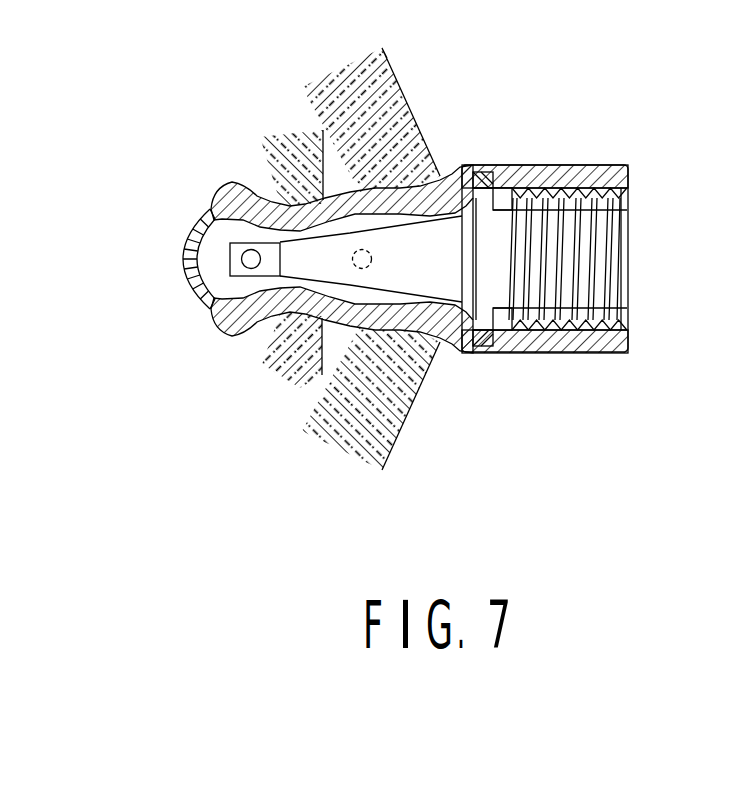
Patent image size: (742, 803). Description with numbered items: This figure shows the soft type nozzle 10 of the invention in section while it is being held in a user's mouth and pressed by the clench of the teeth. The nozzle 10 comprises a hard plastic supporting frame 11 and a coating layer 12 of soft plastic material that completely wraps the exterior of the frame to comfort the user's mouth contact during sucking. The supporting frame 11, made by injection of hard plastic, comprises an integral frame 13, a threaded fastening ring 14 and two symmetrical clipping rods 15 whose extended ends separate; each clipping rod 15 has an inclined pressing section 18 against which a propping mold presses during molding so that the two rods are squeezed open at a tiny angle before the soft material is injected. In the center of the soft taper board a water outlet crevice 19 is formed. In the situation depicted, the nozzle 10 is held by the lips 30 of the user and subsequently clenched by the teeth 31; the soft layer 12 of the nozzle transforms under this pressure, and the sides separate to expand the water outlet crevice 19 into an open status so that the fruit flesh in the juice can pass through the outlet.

The nozzle 10 is at (550, 150).
The supporting frame 11 is at (595, 304).
The coating layer 12 is at (291, 239).
The integral frame 13 is at (488, 321).
The threaded fastening ring 14 is at (635, 315).
The clipping rods 15 is at (317, 347).
The inclined pressing section 18 is at (201, 195).
The water outlet crevice 19 is at (162, 243).
The lips 30 is at (395, 274).
The teeth 31 is at (256, 302).